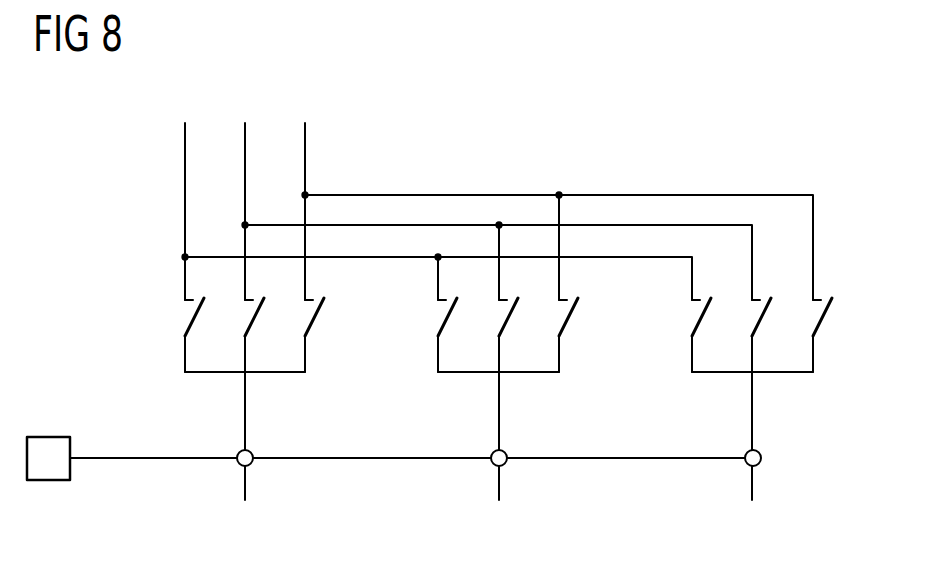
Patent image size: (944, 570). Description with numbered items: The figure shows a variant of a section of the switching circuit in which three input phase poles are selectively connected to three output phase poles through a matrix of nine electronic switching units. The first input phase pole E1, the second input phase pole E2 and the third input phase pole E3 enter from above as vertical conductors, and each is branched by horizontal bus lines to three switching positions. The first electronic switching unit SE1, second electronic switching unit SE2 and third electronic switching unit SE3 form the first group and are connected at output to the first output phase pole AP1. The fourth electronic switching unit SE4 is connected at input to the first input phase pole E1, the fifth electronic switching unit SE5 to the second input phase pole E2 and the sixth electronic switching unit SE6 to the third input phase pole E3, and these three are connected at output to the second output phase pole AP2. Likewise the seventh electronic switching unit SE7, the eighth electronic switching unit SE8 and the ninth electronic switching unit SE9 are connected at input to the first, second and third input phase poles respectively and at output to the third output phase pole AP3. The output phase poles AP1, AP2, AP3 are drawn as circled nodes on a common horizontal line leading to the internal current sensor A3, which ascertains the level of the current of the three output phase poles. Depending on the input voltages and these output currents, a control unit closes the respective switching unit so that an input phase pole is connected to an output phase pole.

The first input phase pole E1 is at (432, 195).
The second input phase pole E2 is at (492, 195).
The third input phase pole E3 is at (553, 195).
The first electronic switching unit SE1 is at (192, 312).
The second electronic switching unit SE2 is at (254, 318).
The third electronic switching unit SE3 is at (314, 318).
The fourth electronic switching unit SE4 is at (447, 312).
The fifth electronic switching unit SE5 is at (507, 318).
The sixth electronic switching unit SE6 is at (569, 318).
The seventh electronic switching unit SE7 is at (701, 312).
The eighth electronic switching unit SE8 is at (761, 318).
The ninth electronic switching unit SE9 is at (821, 318).
The first output phase pole AP1 is at (245, 455).
The second output phase pole AP2 is at (500, 455).
The third output phase pole AP3 is at (754, 455).
The internal current sensor A3 is at (49, 481).